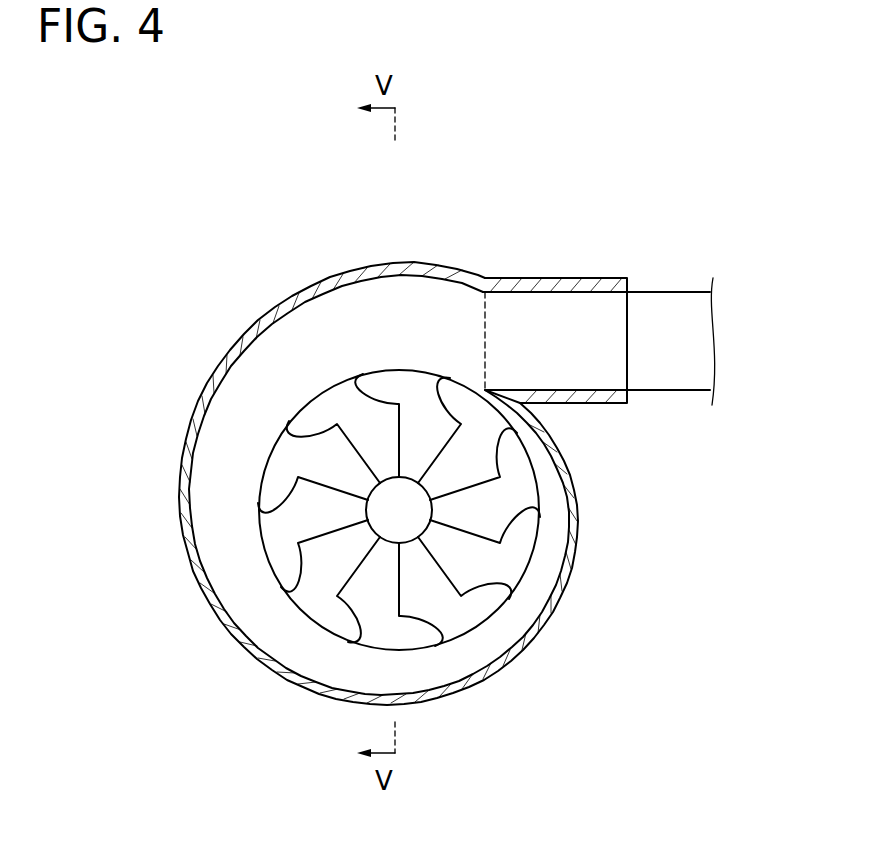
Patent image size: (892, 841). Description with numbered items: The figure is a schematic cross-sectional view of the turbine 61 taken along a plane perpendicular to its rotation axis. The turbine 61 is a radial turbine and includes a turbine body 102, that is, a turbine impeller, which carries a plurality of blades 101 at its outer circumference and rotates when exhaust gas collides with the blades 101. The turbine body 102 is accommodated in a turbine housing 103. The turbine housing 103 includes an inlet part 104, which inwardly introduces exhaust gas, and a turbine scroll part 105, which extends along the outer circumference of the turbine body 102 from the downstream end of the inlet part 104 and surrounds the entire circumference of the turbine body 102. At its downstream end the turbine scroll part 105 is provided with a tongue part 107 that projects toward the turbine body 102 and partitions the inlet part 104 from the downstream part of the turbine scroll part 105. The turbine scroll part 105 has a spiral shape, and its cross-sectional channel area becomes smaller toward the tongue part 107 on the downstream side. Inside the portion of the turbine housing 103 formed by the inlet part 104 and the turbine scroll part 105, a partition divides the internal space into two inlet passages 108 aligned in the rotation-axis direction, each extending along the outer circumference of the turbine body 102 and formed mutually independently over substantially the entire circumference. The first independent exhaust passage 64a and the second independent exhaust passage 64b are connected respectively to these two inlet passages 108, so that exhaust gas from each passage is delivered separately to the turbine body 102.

The turbine 61 is at (568, 150).
The blades 101 is at (515, 545).
The turbine body 102 is at (483, 622).
The turbine housing 103 is at (426, 439).
The inlet part 104 is at (580, 278).
The turbine scroll part 105 is at (362, 265).
The tongue part 107 is at (487, 388).
The inlet passages 108 is at (362, 348).
The first independent exhaust passage 64a is at (668, 298).
The second independent exhaust passage 64b is at (671, 341).